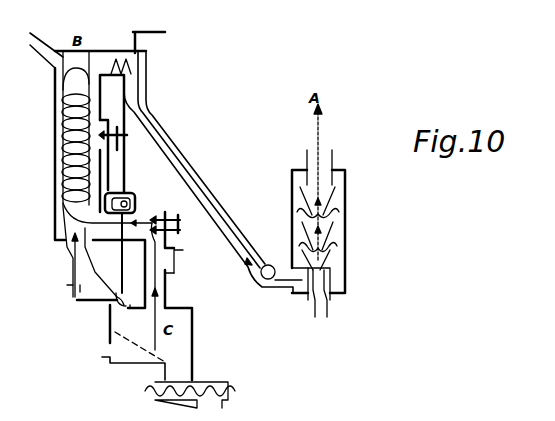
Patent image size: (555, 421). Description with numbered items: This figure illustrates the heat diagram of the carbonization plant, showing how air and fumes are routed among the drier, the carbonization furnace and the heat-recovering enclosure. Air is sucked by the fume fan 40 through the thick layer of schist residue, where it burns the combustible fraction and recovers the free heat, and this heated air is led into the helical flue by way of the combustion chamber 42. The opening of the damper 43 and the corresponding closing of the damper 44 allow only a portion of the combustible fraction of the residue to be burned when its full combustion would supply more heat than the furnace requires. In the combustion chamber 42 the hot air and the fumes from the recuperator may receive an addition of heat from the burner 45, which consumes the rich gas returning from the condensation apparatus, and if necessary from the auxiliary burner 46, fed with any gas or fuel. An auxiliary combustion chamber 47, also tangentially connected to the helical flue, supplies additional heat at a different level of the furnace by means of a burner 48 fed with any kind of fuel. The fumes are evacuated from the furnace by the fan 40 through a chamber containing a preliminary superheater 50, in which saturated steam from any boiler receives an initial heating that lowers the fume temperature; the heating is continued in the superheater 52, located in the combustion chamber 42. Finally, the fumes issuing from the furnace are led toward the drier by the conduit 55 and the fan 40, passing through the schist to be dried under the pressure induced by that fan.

The fume fan 40 is at (264, 287).
The combustion chamber 42 is at (98, 241).
The damper 43 is at (175, 273).
The damper 44 is at (100, 342).
The burner 45 is at (165, 214).
The auxiliary burner 46 is at (175, 247).
The auxiliary combustion chamber 47 is at (109, 153).
The burner 48 is at (118, 140).
The preliminary superheater 50 is at (128, 63).
The superheater 52 is at (136, 192).
The conduit 55 is at (214, 203).